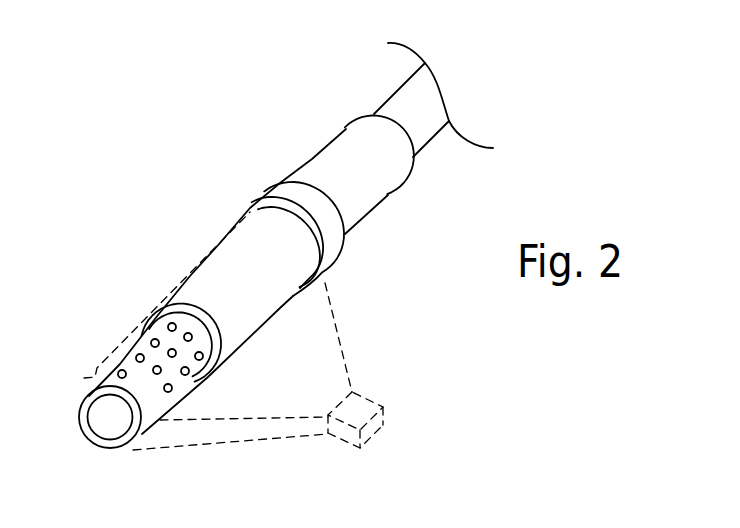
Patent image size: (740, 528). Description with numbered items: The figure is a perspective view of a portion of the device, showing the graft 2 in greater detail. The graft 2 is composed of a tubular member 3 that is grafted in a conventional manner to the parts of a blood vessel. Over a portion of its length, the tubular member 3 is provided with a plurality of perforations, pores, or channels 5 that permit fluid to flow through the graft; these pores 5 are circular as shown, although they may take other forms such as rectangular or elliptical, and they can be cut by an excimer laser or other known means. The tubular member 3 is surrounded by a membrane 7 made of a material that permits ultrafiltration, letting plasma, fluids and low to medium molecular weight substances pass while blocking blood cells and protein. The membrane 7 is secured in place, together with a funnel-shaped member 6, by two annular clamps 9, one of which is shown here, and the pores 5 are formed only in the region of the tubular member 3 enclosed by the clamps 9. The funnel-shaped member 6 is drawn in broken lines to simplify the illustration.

The graft 2 is at (152, 224).
The tubular member 3 is at (106, 375).
The perforations, pores, or channels 5 is at (140, 344).
The funnel-shaped member 6 is at (334, 352).
The membrane 7 is at (231, 268).
The annular clamps 9 is at (266, 194).